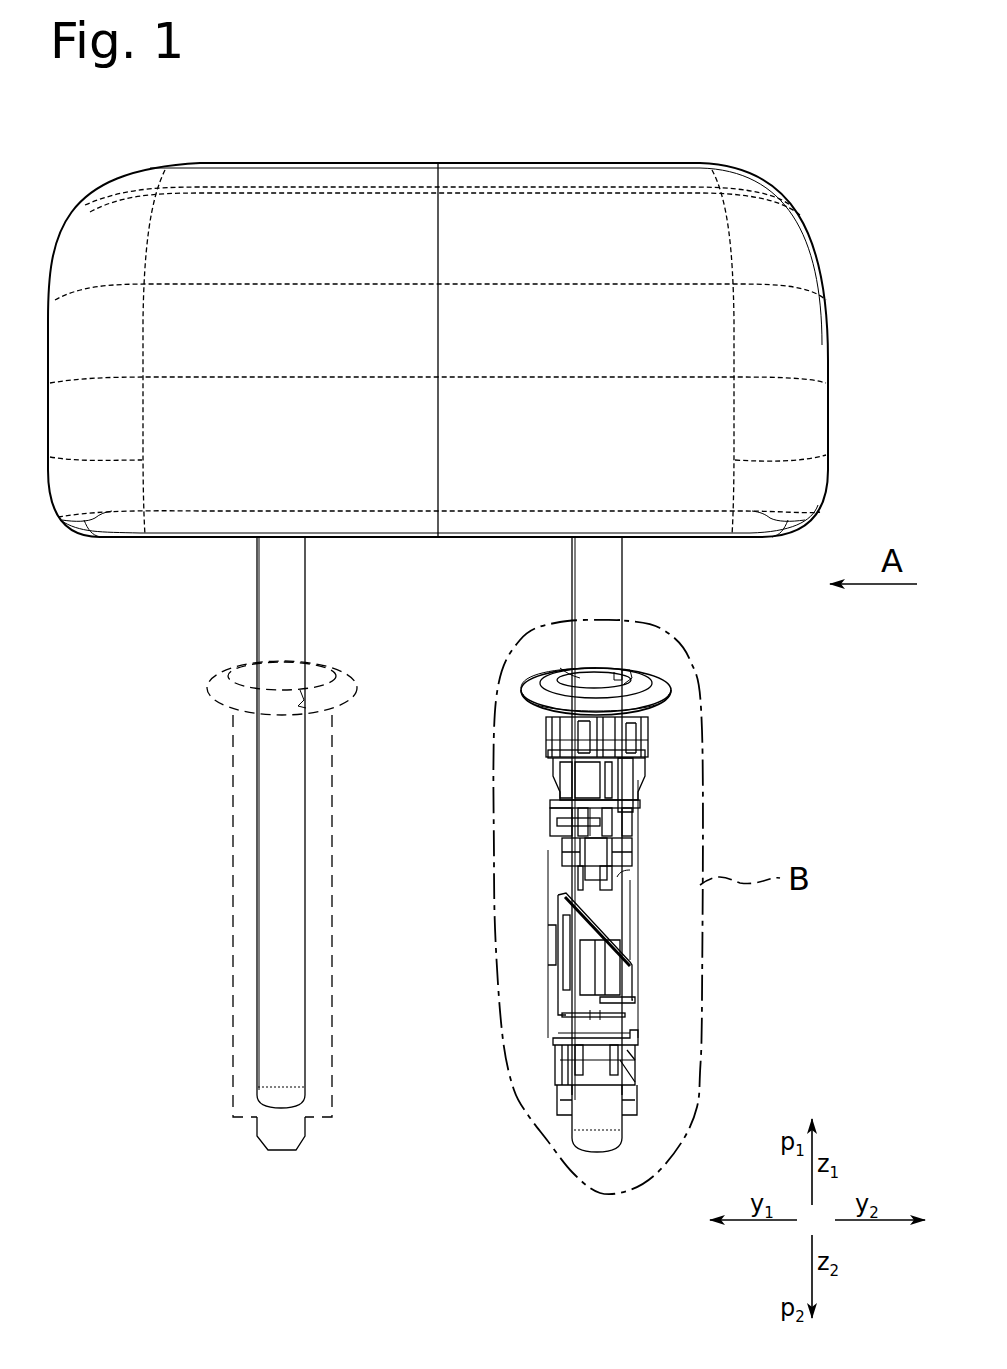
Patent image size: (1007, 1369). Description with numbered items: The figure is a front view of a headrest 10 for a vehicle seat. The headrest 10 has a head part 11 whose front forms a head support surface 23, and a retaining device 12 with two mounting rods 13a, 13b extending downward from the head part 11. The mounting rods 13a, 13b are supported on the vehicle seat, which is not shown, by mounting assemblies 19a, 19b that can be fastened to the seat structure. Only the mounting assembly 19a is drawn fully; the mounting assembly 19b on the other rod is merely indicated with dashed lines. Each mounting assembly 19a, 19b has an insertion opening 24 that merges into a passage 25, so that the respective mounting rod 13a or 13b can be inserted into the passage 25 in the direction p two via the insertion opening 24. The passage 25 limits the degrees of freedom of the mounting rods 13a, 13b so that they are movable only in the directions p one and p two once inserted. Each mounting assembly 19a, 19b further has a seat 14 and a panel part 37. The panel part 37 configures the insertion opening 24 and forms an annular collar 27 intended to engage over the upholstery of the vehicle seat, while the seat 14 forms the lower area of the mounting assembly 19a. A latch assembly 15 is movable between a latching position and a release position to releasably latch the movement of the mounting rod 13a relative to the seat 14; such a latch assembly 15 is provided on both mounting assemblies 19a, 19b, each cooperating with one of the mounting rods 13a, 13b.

The headrest 10 is at (760, 112).
The head part 11 is at (598, 192).
The retaining device 12 is at (244, 619).
The mounting rod 13a is at (593, 582).
The mounting rod 13b is at (273, 918).
The seat 14 is at (233, 993).
The latch assembly 15 is at (638, 1017).
The mounting assembly 19a is at (660, 953).
The mounting assembly 19b is at (220, 820).
The head support surface 23 is at (800, 305).
The insertion opening 24 is at (633, 670).
The passage 25 is at (564, 674).
The annular collar 27 is at (674, 697).
The panel part 37 is at (540, 685).